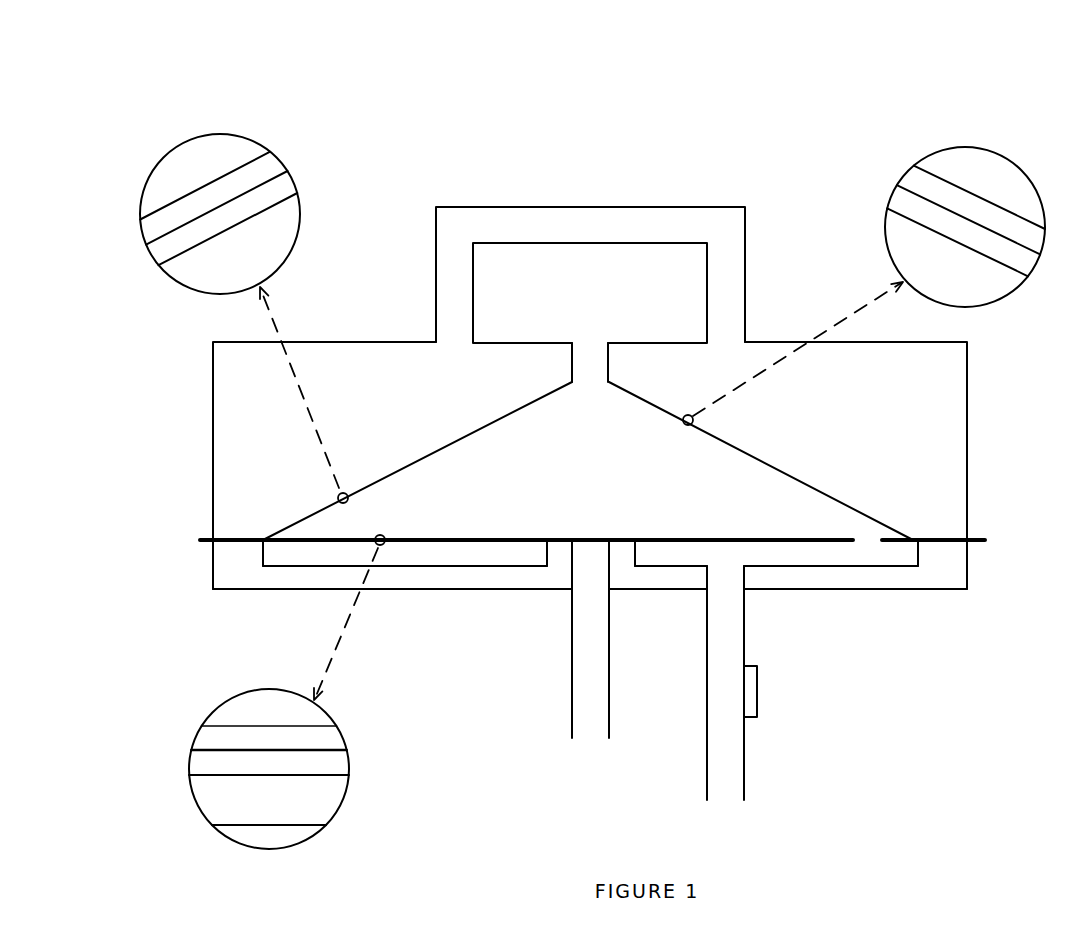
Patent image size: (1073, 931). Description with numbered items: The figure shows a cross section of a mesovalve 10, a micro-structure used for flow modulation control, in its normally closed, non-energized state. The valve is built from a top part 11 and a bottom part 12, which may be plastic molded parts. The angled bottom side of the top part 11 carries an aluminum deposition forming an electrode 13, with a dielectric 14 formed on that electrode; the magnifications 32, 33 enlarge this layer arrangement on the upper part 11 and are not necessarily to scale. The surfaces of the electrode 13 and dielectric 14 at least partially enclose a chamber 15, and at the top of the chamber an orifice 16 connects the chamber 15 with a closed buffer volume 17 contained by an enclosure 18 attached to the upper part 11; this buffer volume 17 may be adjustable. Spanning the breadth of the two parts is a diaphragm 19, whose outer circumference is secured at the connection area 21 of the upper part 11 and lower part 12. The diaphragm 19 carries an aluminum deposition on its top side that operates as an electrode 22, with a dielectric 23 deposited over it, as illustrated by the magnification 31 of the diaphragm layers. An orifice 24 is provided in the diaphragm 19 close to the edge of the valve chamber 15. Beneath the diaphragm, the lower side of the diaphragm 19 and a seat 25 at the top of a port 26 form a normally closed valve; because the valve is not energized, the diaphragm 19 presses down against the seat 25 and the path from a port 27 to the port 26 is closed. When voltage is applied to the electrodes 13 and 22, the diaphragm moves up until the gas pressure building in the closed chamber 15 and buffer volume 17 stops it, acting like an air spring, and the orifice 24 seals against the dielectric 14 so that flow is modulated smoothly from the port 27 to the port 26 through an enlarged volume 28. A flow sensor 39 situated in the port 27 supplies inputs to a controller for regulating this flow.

The mesovalve 10 is at (728, 108).
The top part 11 is at (238, 158).
The bottom part 12 is at (238, 577).
The electrode 13 is at (278, 158).
The dielectric 14 is at (288, 186).
The chamber 15 is at (226, 262).
The orifice 16 is at (608, 389).
The buffer volume 17 is at (577, 300).
The enclosure 18 is at (596, 222).
The diaphragm 19 is at (800, 543).
The connection area 21 is at (193, 557).
The electrode 22 is at (525, 513).
The dielectric 23 is at (325, 738).
The orifice 24 is at (858, 523).
The seat 25 is at (560, 552).
The port 26 is at (577, 631).
The port 27 is at (711, 631).
The enlarged volume 28 is at (485, 552).
The magnification 31 is at (343, 650).
The magnification 32 is at (275, 318).
The magnification 33 is at (830, 328).
The flow sensor 39 is at (757, 690).